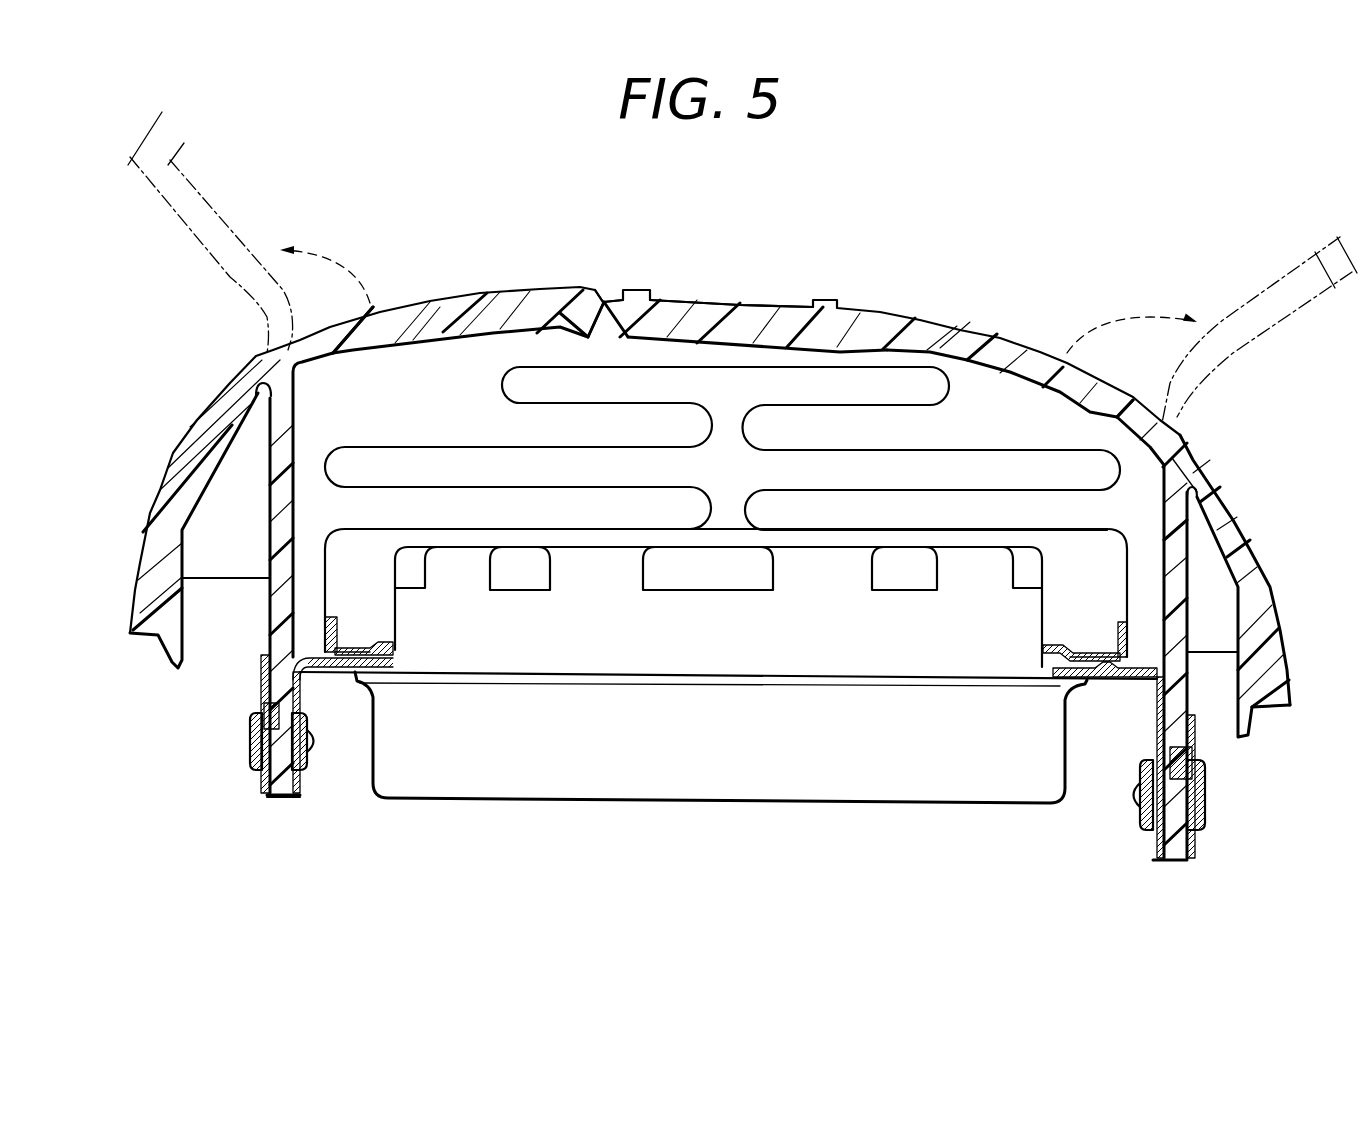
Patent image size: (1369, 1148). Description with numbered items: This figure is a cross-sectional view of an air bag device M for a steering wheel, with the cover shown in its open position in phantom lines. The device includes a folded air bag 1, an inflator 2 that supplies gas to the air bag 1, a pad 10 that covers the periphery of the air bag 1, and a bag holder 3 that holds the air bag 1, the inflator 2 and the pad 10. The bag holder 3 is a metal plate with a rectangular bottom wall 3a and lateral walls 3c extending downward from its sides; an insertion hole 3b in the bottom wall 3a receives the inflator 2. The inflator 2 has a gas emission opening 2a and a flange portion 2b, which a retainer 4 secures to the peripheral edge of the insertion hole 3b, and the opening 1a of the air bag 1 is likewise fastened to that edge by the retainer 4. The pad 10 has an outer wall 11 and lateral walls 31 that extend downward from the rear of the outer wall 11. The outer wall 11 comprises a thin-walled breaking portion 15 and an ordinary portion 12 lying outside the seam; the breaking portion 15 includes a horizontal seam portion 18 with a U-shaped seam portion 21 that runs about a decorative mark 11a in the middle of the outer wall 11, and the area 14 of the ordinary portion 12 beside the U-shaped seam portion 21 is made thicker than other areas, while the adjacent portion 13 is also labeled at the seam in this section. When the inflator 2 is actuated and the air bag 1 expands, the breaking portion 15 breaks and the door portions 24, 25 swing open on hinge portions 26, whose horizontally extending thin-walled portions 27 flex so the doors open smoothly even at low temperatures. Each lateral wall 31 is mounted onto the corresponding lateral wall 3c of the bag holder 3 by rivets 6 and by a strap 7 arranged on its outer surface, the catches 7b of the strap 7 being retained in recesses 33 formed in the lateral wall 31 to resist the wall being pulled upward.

The air bag 1 is at (827, 535).
The opening 1a is at (395, 655).
The inflator 2 is at (698, 782).
The gas emission opening 2a is at (703, 580).
The flange portion 2b is at (612, 678).
The bag holder 3 is at (333, 690).
The bottom wall 3a is at (371, 668).
The insertion hole 3b is at (392, 660).
The lateral walls 3c is at (300, 793).
The retainer 4 is at (335, 640).
The rivets 6 is at (305, 760).
The strap 7 is at (263, 662).
The catches 7b is at (270, 722).
The pad 10 is at (1010, 238).
The outer wall 11 is at (880, 318).
The decorative mark 11a is at (737, 284).
The ordinary portion 12 is at (403, 312).
The engaging face 13 is at (640, 325).
The area 14 is at (580, 332).
The breaking portion 15 is at (612, 272).
The horizontal seam portion 18 is at (609, 296).
The U-shaped seam portion 21 is at (604, 300).
The door portion 24 is at (1287, 290).
The door portion 25 is at (182, 155).
The hinge portions 26 is at (240, 345).
The thin-walled portions 27 is at (263, 292).
The lateral walls 31 is at (283, 592).
The recesses 33 is at (258, 748).
The air bag device M is at (243, 812).